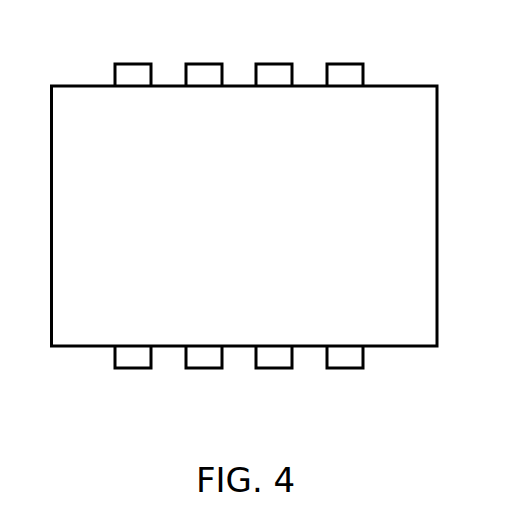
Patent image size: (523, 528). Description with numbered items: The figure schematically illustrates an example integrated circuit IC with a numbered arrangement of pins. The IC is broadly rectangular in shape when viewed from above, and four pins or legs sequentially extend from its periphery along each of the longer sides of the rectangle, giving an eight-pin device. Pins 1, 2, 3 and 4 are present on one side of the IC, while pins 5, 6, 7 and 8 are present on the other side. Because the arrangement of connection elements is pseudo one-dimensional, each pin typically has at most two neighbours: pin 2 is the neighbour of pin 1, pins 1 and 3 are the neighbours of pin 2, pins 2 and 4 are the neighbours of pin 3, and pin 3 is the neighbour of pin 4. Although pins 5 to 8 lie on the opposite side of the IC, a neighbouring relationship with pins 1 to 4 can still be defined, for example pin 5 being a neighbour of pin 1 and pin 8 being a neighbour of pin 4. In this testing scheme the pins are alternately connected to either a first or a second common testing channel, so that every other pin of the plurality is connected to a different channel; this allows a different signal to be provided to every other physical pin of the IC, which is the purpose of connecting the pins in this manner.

The pin 1 is at (133, 379).
The pin 2 is at (204, 379).
The pin 3 is at (274, 379).
The pin 4 is at (345, 379).
The pin 5 is at (133, 52).
The pin 6 is at (204, 52).
The pin 7 is at (274, 52).
The pin 8 is at (345, 52).
The integrated circuit IC is at (256, 227).